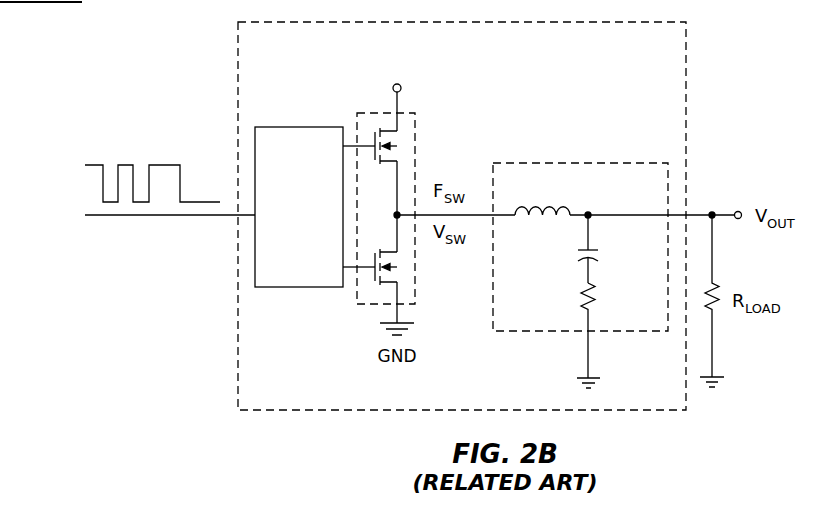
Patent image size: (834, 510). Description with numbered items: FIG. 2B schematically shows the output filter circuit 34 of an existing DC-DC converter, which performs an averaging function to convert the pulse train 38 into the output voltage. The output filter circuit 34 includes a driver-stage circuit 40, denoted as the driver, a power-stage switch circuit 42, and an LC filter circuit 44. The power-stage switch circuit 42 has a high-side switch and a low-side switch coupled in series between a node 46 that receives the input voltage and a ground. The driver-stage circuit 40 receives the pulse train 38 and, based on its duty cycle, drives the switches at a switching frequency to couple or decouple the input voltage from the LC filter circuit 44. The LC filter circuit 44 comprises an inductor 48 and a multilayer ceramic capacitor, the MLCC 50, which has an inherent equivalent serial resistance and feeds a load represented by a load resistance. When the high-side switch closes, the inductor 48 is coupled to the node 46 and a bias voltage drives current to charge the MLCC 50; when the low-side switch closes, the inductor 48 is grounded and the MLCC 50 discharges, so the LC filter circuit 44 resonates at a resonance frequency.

The output filter circuit 34 is at (275, 396).
The pulse train 38 is at (155, 149).
The driver-stage circuit 40 is at (290, 232).
The power-stage switch circuit 42 is at (415, 292).
The LC filter circuit 44 is at (575, 214).
The node 46 is at (403, 85).
The inductor 48 is at (548, 222).
The MLCC 50 is at (588, 259).